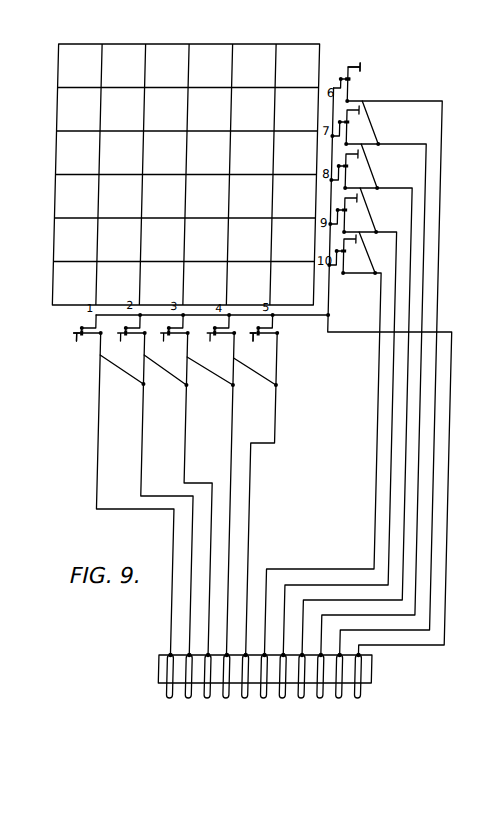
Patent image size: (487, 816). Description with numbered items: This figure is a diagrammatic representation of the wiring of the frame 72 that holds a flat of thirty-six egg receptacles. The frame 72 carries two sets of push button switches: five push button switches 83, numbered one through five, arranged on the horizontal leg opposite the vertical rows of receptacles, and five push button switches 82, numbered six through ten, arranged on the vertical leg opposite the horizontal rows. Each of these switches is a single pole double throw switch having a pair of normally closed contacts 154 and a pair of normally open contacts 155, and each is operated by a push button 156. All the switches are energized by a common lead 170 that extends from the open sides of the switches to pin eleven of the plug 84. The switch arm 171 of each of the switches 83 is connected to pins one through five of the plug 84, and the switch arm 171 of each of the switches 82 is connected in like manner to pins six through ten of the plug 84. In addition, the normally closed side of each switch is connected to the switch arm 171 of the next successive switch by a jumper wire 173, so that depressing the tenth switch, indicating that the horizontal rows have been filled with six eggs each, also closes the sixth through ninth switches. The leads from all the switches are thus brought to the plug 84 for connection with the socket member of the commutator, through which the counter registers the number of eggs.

The frame 72 is at (51, 105).
The normally open contacts 155 is at (334, 76).
The push button 156 is at (355, 67).
The normally closed contacts 154 is at (347, 80).
The jumper wire 173 is at (369, 127).
The push button switches 82 is at (340, 275).
The common lead 170 is at (330, 316).
The switch arm 171 is at (168, 329).
The push button switches 83 is at (86, 341).
The plug 84 is at (381, 674).